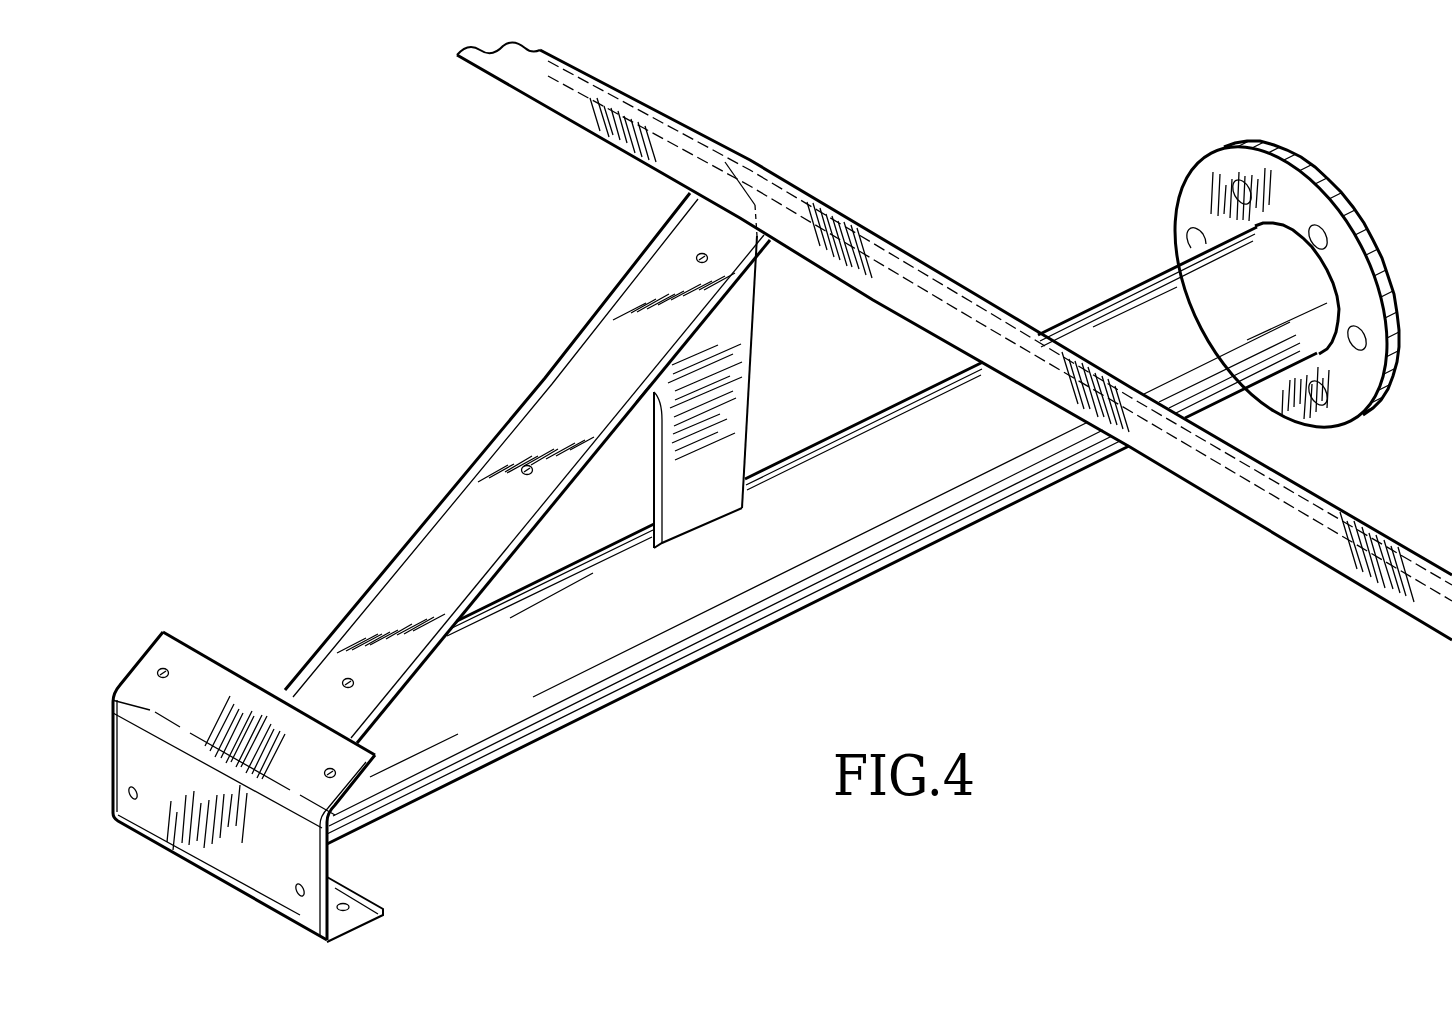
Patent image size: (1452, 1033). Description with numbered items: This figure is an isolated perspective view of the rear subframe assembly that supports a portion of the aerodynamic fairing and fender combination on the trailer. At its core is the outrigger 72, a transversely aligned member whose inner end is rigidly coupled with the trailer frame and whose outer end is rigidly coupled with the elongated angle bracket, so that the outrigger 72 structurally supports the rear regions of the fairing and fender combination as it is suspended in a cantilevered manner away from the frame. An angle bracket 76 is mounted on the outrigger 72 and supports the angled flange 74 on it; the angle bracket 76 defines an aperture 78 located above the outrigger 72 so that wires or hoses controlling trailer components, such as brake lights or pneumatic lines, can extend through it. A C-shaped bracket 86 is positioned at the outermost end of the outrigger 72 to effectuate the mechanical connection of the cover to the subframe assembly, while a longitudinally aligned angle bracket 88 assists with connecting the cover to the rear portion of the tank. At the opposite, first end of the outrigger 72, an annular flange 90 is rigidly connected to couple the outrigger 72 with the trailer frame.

The outrigger 72 is at (863, 465).
The angled flange 74 is at (473, 535).
The angle bracket 76 is at (733, 438).
The aperture 78 is at (625, 457).
The C-shaped bracket 86 is at (237, 860).
The longitudinally aligned angle bracket 88 is at (907, 255).
The annular flange 90 is at (1313, 188).